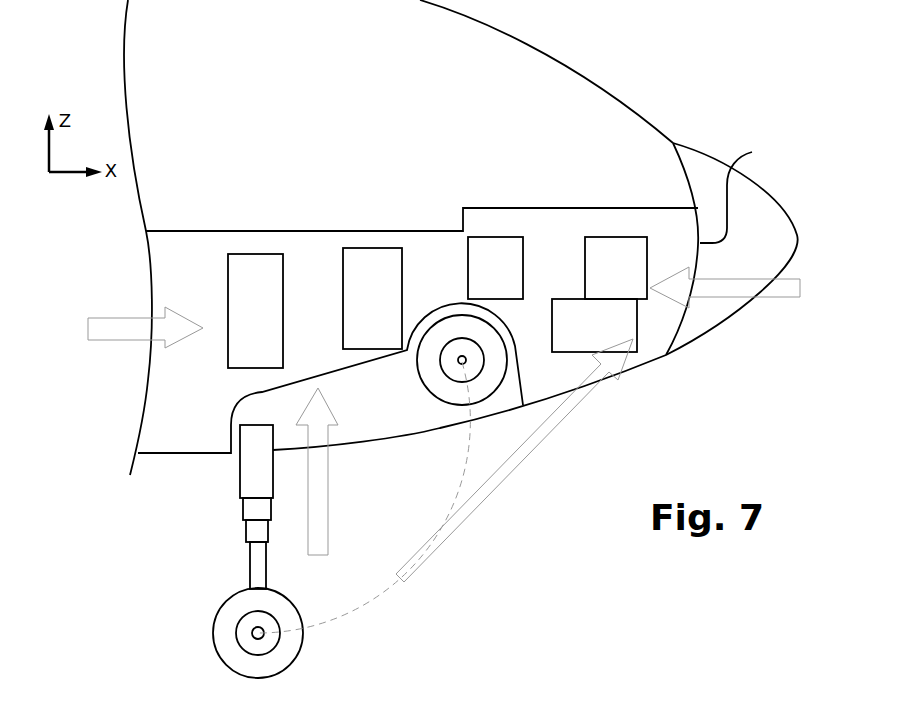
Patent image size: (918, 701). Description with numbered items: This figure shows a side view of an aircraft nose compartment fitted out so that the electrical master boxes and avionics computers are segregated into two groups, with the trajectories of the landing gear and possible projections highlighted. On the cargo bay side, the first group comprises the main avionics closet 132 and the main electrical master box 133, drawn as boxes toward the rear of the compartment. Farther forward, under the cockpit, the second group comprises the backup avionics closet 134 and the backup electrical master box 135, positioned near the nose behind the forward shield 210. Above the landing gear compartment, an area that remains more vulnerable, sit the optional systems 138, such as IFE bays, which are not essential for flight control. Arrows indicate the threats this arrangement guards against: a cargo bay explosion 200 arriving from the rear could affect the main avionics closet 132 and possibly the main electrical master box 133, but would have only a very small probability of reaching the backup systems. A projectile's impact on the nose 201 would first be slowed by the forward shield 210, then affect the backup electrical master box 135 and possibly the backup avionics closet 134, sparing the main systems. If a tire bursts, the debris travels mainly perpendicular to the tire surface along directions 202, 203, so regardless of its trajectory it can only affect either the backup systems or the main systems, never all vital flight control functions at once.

The main avionics closet 132 is at (248, 275).
The main electrical master box 133 is at (363, 268).
The backup avionics closet 134 is at (573, 328).
The backup electrical master box 135 is at (626, 258).
The optional systems 138 is at (493, 257).
The cargo bay explosion 200 is at (112, 328).
The projectile's impact on the nose 201 is at (720, 298).
The tire bursting debris trajectory 202 is at (503, 472).
The tire bursting debris trajectory 203 is at (318, 528).
The forward shield 210 is at (748, 190).